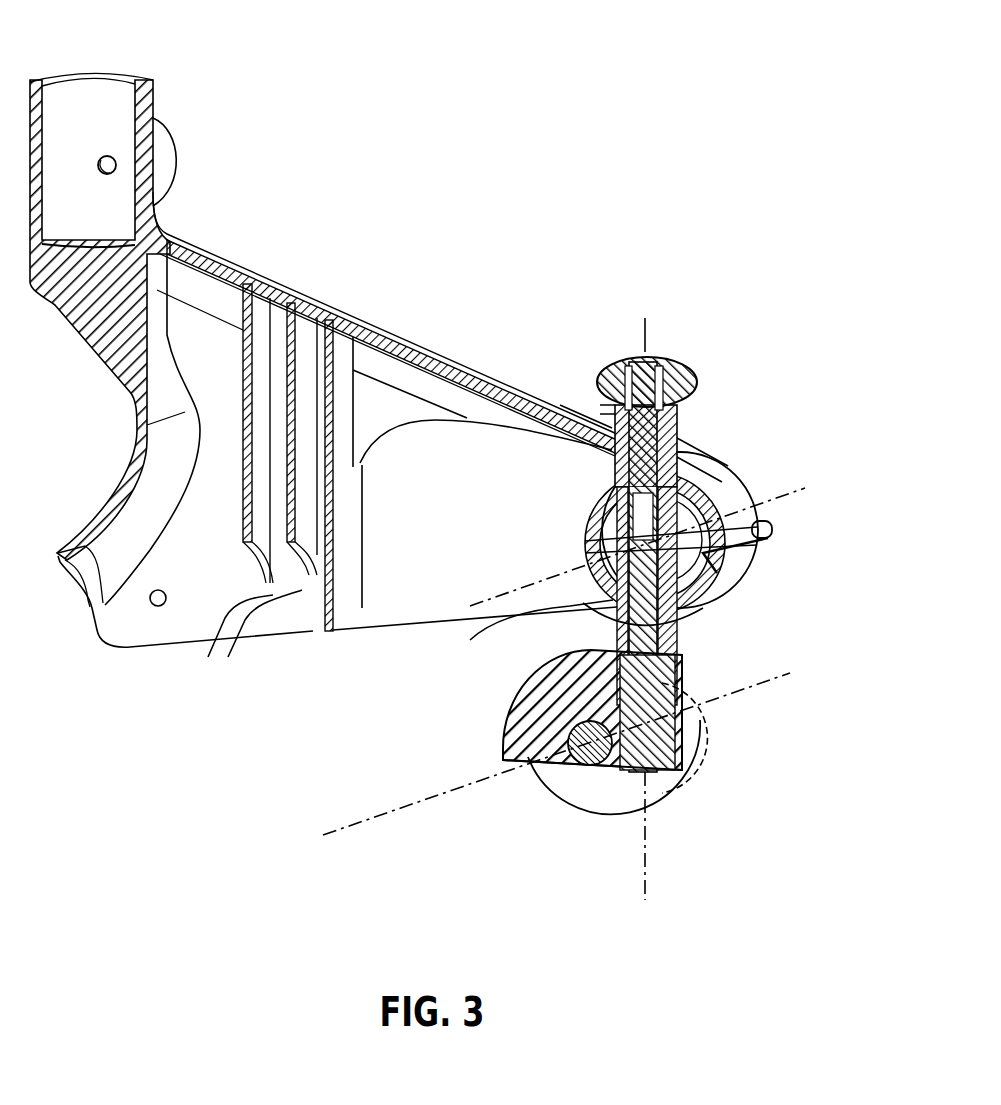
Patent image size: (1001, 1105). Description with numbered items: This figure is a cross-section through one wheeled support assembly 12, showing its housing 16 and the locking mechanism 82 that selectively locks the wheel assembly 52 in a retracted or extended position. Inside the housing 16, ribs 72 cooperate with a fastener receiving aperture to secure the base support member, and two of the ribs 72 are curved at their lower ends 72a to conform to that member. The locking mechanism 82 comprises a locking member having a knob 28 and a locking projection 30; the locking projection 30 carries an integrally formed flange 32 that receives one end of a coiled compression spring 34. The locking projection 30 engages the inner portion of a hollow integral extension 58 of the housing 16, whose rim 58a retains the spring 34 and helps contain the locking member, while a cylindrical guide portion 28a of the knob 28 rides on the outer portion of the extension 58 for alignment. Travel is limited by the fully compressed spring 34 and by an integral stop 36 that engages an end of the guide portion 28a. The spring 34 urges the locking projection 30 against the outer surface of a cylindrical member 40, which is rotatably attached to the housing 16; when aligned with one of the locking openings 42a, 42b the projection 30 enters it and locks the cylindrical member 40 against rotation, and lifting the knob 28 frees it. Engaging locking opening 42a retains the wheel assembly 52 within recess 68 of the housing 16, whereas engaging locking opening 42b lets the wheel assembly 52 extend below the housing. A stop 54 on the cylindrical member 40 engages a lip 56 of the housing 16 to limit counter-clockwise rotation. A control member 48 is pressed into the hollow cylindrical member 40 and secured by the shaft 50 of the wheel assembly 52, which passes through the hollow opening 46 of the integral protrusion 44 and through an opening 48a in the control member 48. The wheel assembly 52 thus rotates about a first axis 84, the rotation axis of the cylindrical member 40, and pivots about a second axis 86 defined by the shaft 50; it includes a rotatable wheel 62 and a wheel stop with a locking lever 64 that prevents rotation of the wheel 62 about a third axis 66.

The wheeled support assembly 12 is at (290, 287).
The housing 16 is at (357, 332).
The knob 28 is at (677, 363).
The cylindrical guide portion 28a is at (605, 413).
The locking projection 30 is at (682, 407).
The flange 32 is at (680, 458).
The spring 34 is at (677, 438).
The integral stop 36 is at (607, 430).
The cylindrical member 40 is at (583, 597).
The locking opening 42a is at (592, 540).
The locking opening 42b is at (612, 483).
The hollow integral protrusion 44 is at (678, 645).
The hollow opening 46 is at (692, 615).
The control member 48 is at (598, 532).
The opening 48a is at (720, 500).
The shaft 50 is at (560, 632).
The wheel assembly 52 is at (610, 818).
The stop 54 is at (730, 565).
The lip 56 is at (773, 532).
The hollow integral extension 58 is at (612, 400).
The rim 58a is at (627, 362).
The wheel 62 is at (567, 782).
The locking lever 64 is at (700, 745).
The third axis 66 is at (368, 820).
The recess 68 is at (393, 575).
The ribs 72 is at (290, 330).
The lower ends 72a is at (246, 644).
The locking mechanism 82 is at (652, 350).
The first axis 84 is at (503, 590).
The second axis 86 is at (647, 857).